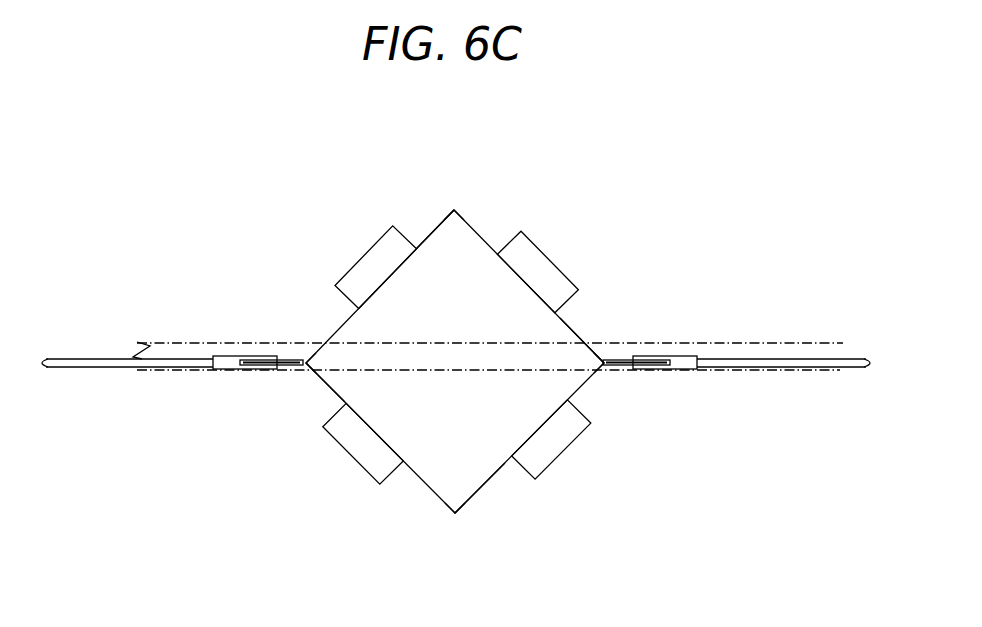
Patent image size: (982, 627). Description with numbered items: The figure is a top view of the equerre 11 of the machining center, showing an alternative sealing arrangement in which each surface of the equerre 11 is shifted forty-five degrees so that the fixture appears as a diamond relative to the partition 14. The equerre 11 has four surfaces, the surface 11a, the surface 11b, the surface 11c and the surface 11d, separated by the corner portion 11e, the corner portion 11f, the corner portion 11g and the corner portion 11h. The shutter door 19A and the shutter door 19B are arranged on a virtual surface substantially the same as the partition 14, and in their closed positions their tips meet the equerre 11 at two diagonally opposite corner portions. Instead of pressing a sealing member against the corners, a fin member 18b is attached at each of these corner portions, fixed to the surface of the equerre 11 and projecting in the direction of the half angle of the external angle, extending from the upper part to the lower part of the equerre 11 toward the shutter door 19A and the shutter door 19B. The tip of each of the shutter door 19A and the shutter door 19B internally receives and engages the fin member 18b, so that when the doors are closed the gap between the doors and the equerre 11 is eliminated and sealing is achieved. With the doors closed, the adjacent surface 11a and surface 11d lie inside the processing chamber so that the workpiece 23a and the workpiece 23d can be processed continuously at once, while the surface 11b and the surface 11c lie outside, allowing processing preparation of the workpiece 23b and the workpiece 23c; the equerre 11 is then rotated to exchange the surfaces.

The equerre 11 is at (452, 237).
The surface 11a is at (580, 336).
The surface 11b is at (483, 487).
The surface 11c is at (326, 386).
The surface 11d is at (433, 230).
The corner portion 11e is at (456, 206).
The corner portion 11f is at (606, 366).
The corner portion 11g is at (455, 515).
The corner portion 11h is at (276, 370).
The partition 14 is at (779, 344).
The fin member 18b is at (285, 356).
The shutter door 19A is at (170, 358).
The shutter door 19B is at (708, 358).
The workpiece 23a is at (550, 263).
The workpiece 23b is at (558, 437).
The workpiece 23c is at (353, 462).
The workpiece 23d is at (357, 255).